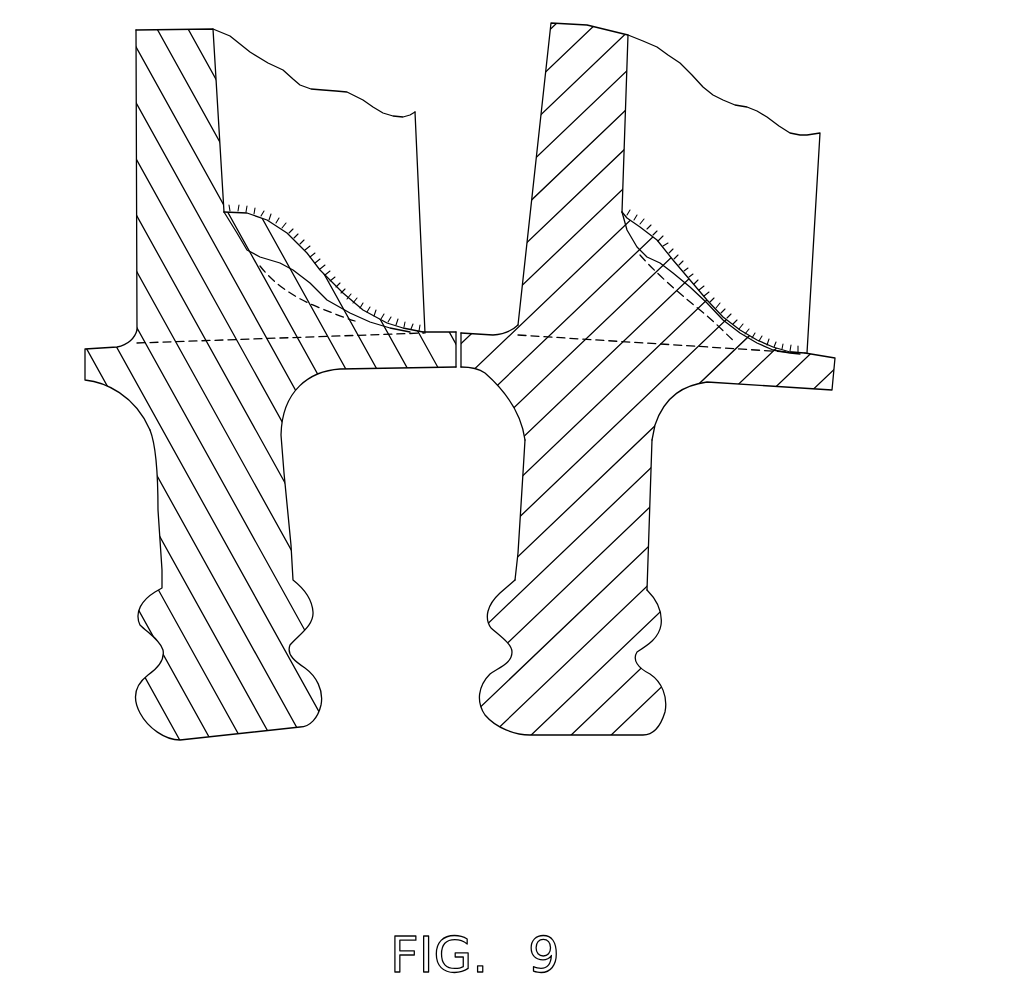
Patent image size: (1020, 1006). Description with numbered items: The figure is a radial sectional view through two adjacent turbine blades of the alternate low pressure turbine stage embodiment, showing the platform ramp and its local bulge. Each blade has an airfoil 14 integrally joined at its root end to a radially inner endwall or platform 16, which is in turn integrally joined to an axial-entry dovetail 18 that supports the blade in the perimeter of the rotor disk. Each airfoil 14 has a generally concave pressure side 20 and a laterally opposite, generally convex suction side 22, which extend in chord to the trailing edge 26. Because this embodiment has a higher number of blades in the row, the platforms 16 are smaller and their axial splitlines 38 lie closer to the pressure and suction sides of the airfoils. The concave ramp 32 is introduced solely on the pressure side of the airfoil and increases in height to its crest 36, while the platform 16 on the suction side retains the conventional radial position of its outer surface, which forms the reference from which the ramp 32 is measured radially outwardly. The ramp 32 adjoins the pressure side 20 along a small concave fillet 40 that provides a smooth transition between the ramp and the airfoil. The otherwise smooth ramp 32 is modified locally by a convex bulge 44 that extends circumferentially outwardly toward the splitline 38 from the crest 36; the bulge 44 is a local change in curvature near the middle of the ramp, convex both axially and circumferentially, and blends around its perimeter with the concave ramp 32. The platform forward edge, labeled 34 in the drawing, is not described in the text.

The airfoil 14 is at (215, 266).
The platform 16 is at (818, 357).
The axial-entry dovetail 18 is at (653, 672).
The pressure side 20 is at (330, 144).
The suction side 22 is at (135, 132).
The trailing edge 26 is at (418, 162).
The ramp 32 is at (357, 317).
The platform forward edge 34 is at (95, 348).
The crest 36 is at (236, 214).
The axial splitline 38 is at (458, 368).
The fillet 40 is at (285, 231).
The convex bulge 44 is at (315, 277).